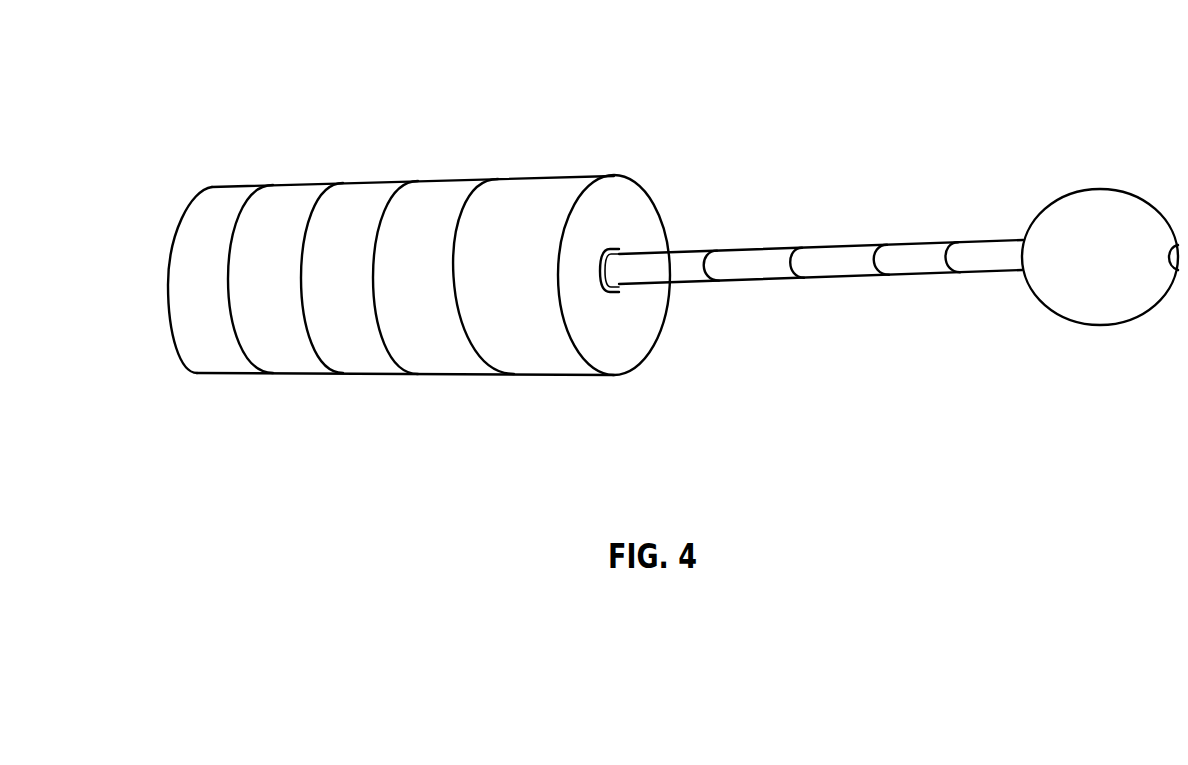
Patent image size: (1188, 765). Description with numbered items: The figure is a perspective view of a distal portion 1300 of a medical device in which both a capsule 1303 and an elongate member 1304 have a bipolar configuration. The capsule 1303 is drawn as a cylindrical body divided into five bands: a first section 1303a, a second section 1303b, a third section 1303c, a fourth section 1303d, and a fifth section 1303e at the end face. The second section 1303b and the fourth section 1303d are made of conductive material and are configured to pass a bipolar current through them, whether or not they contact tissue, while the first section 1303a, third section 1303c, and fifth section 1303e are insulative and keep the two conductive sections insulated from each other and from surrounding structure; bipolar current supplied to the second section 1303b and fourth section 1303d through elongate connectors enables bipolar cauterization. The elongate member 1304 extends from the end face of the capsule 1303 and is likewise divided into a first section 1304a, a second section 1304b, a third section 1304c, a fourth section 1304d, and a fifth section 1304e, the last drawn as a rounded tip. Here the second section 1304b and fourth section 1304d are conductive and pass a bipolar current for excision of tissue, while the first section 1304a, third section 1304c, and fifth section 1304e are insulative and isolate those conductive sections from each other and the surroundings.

The distal portion 1300 is at (673, 92).
The capsule 1303 is at (378, 388).
The first section 1303a is at (228, 210).
The second section 1303b is at (292, 358).
The third section 1303c is at (372, 215).
The fourth section 1303d is at (463, 358).
The fifth section 1303e is at (552, 202).
The elongate member 1304 is at (860, 304).
The first section 1304a is at (687, 260).
The second section 1304b is at (758, 272).
The third section 1304c is at (837, 258).
The fourth section 1304d is at (920, 263).
The fifth section 1304e is at (985, 262).